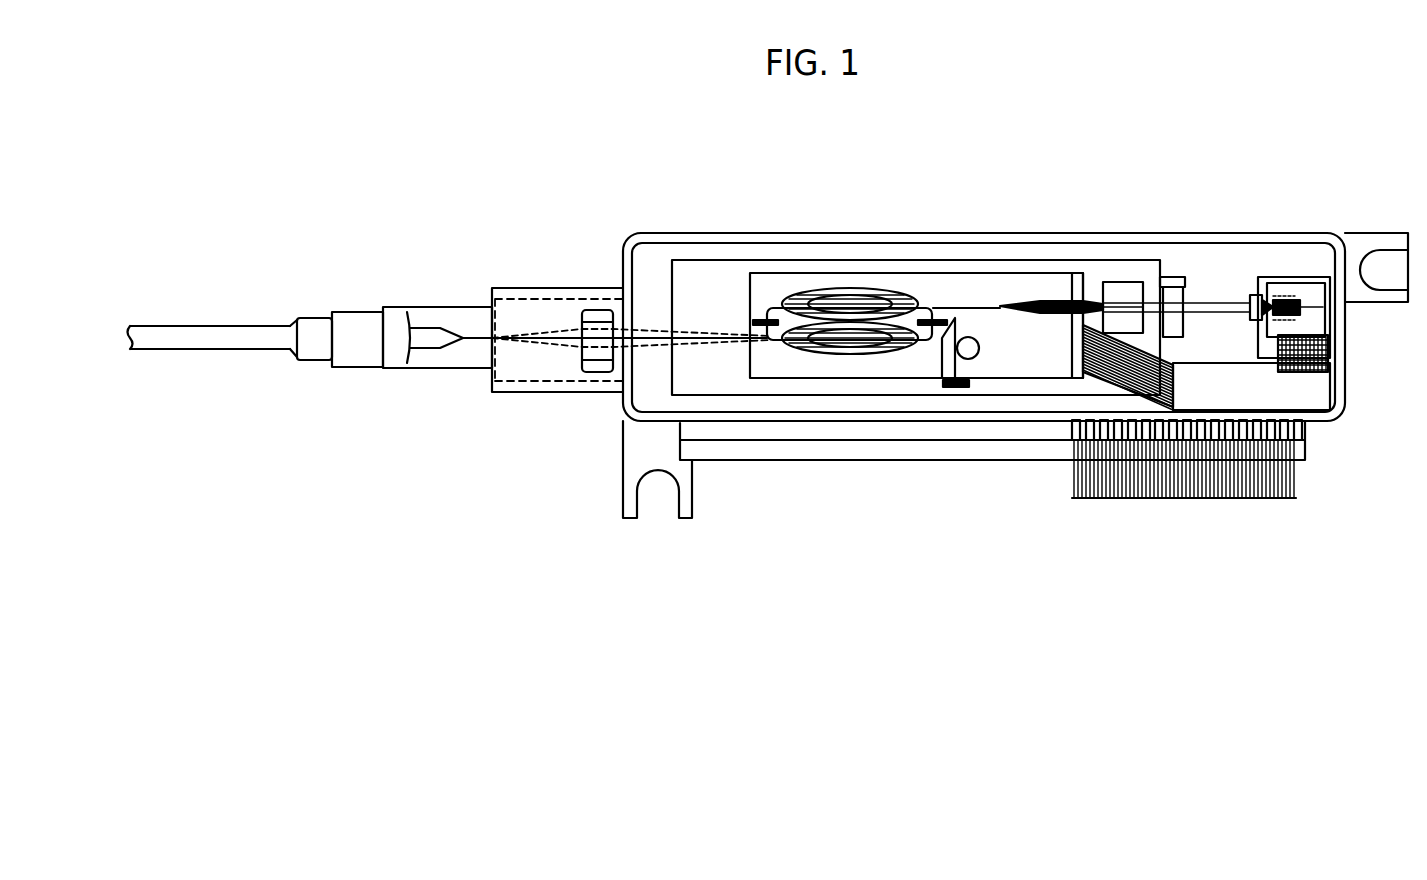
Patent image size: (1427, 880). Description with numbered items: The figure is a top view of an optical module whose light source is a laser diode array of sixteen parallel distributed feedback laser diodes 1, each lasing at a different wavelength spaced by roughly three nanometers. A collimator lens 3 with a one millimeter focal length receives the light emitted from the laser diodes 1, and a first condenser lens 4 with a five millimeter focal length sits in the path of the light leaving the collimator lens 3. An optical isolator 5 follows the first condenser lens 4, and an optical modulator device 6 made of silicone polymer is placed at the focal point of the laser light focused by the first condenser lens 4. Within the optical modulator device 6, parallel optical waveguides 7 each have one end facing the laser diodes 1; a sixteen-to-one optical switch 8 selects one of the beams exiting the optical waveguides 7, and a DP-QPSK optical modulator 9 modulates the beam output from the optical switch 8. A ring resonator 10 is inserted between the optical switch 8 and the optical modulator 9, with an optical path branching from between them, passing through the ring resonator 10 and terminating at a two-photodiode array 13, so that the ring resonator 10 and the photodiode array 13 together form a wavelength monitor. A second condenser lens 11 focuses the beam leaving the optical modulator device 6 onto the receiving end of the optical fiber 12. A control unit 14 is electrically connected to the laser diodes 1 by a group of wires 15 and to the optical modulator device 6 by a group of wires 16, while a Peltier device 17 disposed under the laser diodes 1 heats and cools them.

The laser diode 1 is at (1330, 308).
The collimator lens 3 is at (1250, 295).
The first condenser lens 4 is at (1168, 278).
The optical isolator 5 is at (1122, 300).
The optical modulator device 6 is at (918, 272).
The optical waveguide 7 is at (1078, 273).
The optical switch 8 is at (1060, 300).
The optical modulator 9 is at (850, 290).
The ring resonator 10 is at (964, 337).
The second condenser lens 11 is at (598, 310).
The optical fiber 12 is at (255, 335).
The 2-photodiode array 13 is at (952, 389).
The control unit 14 is at (1330, 395).
The group of wires 15 is at (1330, 360).
The group of wires 16 is at (1163, 366).
The Peltier device 17 is at (1310, 285).